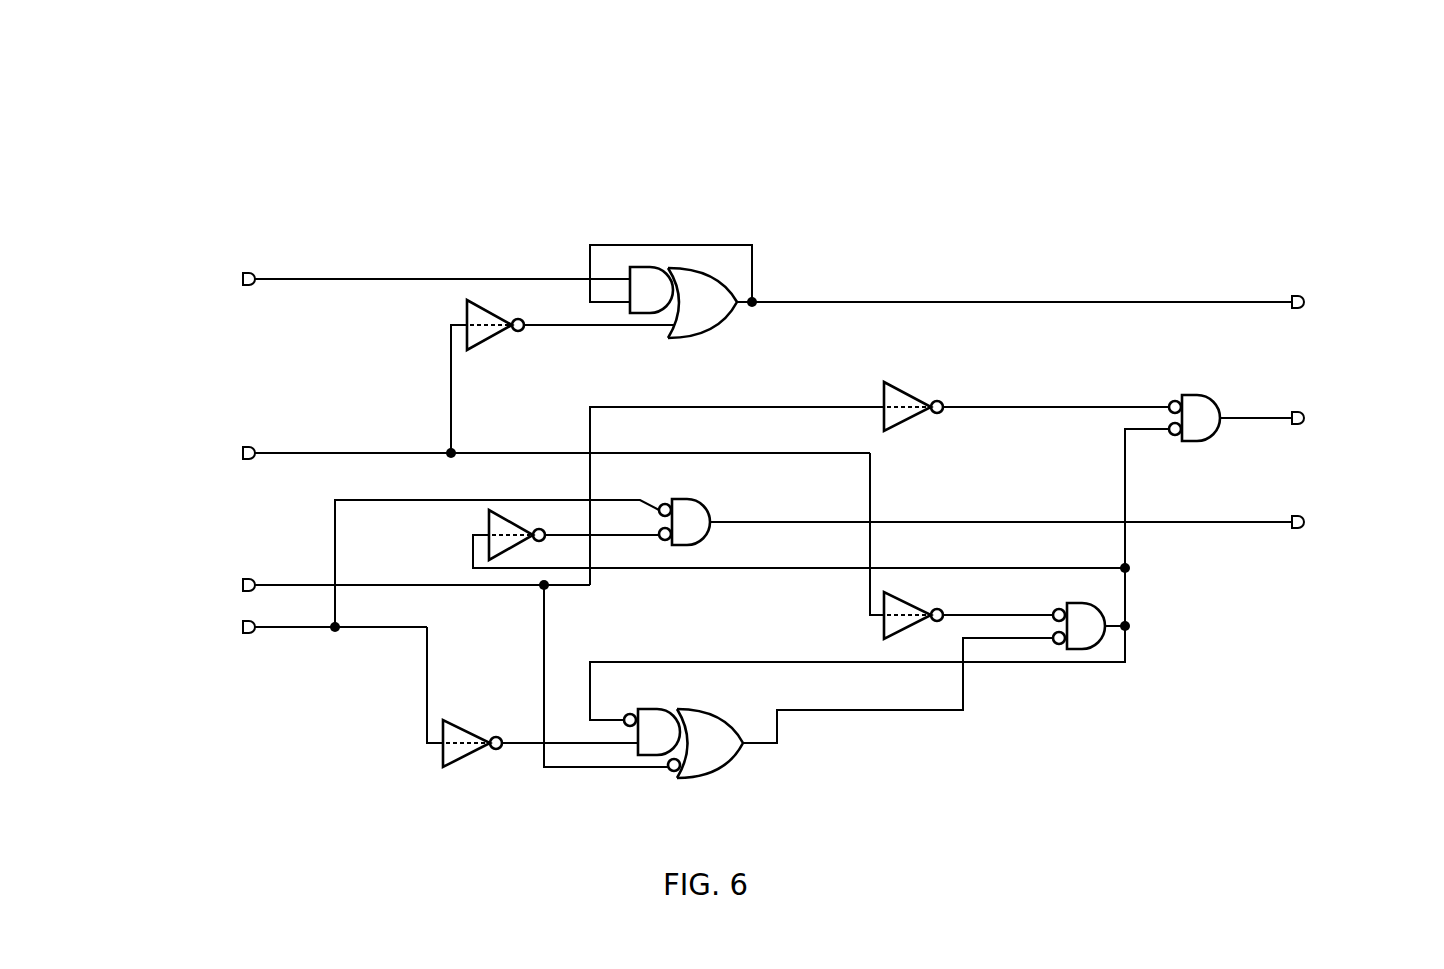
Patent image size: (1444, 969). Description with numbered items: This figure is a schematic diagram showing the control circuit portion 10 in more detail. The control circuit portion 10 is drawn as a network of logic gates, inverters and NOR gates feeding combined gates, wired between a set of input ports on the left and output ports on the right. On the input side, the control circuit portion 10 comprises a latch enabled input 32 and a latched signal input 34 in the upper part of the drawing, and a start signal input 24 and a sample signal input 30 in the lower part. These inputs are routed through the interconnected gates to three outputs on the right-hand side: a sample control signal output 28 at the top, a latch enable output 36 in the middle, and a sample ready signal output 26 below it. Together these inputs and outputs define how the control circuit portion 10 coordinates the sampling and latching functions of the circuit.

The control circuit portion 10 is at (1003, 158).
The latch enabled input 32 is at (246, 274).
The latched signal input 34 is at (238, 443).
The start signal input 24 is at (237, 575).
The sample signal input 30 is at (240, 632).
The sample control signal output 28 is at (1294, 297).
The latch enable output 36 is at (1304, 426).
The sample ready signal output 26 is at (1300, 530).